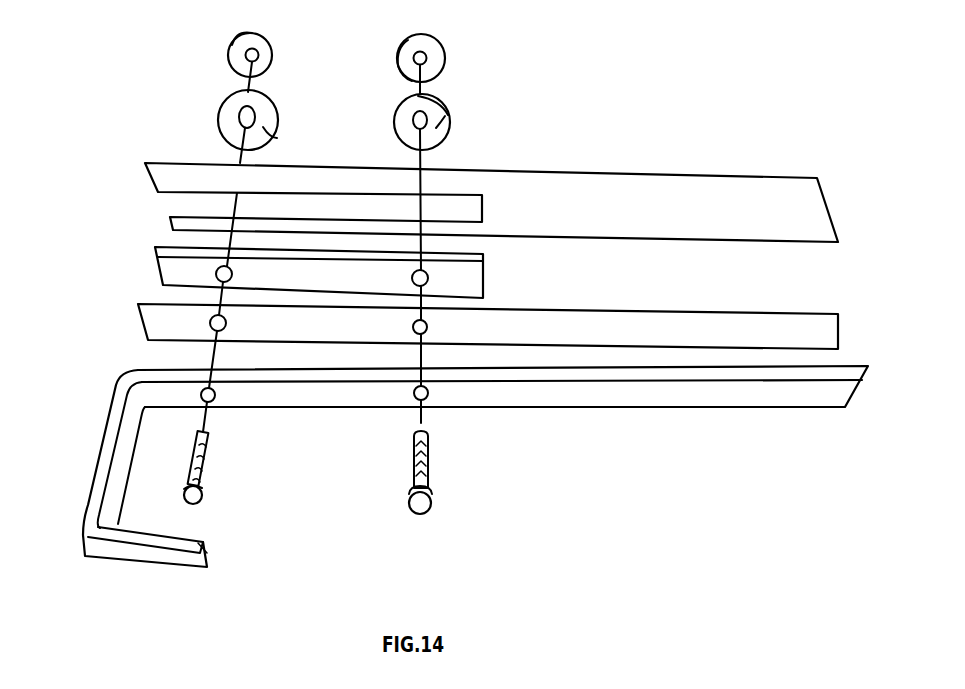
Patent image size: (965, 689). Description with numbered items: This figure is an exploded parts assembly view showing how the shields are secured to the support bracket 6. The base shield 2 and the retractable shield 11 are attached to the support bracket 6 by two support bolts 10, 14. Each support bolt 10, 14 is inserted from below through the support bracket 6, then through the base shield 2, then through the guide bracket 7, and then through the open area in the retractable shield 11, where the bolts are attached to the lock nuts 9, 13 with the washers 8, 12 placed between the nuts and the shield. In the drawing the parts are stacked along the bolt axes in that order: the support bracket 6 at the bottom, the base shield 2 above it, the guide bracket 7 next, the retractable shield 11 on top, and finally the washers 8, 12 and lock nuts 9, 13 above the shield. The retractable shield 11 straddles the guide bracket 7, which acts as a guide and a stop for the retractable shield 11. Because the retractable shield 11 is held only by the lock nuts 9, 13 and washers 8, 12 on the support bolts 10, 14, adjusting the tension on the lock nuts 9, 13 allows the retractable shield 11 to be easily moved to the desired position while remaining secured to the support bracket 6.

The base shield 2 is at (802, 330).
The support bracket 6 is at (210, 550).
The guide bracket 7 is at (462, 270).
The washer 8 is at (277, 138).
The lock nut 9 is at (256, 62).
The support bolt 10 is at (207, 473).
The retractable shield 11 is at (793, 215).
The washer 12 is at (445, 117).
The lock nut 13 is at (433, 60).
The support bolt 14 is at (427, 470).